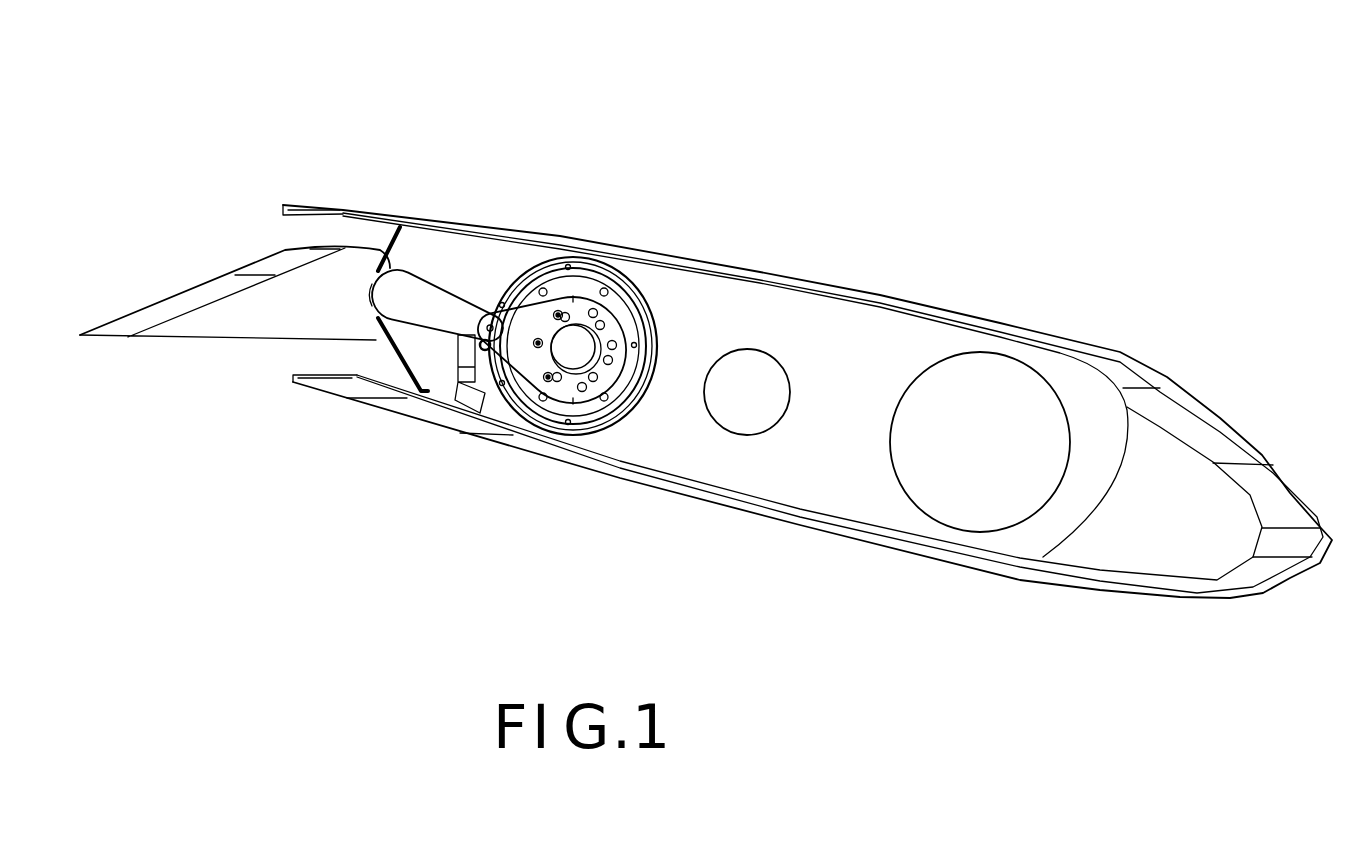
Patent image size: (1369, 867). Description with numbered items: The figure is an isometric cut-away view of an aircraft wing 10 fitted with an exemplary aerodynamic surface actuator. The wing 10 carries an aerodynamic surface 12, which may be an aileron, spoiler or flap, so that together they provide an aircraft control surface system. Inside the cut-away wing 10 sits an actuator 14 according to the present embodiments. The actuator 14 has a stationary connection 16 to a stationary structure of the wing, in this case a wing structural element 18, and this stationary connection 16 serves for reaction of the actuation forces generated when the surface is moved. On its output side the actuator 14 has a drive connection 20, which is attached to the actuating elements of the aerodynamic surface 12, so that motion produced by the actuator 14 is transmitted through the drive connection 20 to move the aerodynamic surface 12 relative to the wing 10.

The aircraft wing 10 is at (710, 264).
The aerodynamic surface 12 is at (240, 327).
The actuator 14 is at (577, 408).
The stationary connection 16 is at (460, 345).
The wing structural element 18 is at (467, 377).
The drive connection 20 is at (484, 313).